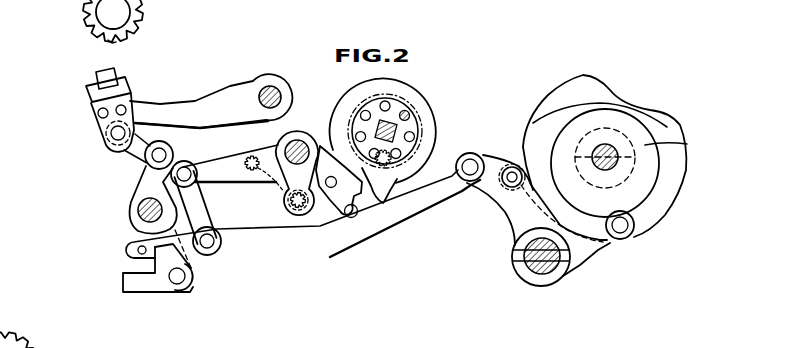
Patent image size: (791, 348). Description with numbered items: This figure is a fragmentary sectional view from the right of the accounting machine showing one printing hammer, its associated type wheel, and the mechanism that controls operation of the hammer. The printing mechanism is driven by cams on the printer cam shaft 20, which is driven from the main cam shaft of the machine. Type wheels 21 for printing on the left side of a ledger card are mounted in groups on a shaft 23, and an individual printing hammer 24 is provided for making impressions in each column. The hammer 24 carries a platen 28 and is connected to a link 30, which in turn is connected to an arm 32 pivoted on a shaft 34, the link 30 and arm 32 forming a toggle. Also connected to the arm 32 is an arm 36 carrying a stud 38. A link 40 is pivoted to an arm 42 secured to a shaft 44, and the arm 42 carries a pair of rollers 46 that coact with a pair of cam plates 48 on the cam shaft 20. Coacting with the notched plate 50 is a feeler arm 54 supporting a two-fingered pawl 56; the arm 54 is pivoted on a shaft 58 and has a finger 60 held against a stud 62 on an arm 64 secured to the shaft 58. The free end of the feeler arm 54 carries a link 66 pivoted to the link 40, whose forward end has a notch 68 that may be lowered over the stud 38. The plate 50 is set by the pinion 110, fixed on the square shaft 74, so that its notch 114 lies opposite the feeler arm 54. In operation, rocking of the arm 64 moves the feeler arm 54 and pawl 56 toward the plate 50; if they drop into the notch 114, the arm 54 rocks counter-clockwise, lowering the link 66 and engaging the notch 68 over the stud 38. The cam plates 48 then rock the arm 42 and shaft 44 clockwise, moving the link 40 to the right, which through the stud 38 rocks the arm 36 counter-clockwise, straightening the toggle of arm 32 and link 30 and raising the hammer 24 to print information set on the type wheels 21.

The printer cam shaft 20 is at (610, 143).
The type wheels 21 is at (112, 42).
The shaft 23 is at (113, 12).
The printing hammer 24 is at (195, 105).
The platen 28 is at (103, 71).
The link 30 is at (138, 150).
The arm 32 is at (142, 178).
The shaft 34 is at (137, 210).
The arm 36 is at (135, 288).
The stud 38 is at (175, 288).
The link 40 is at (434, 205).
The arm 42 is at (515, 212).
The shaft 44 is at (557, 267).
The rollers 46 is at (505, 166).
The cam plates 48 is at (673, 158).
The notched plate 50 is at (415, 89).
The feeler arm 54 is at (338, 210).
The two-fingered pawl 56 is at (331, 144).
The shaft 58 is at (294, 148).
The finger 60 is at (278, 200).
The stud 62 is at (288, 218).
The arm 64 is at (276, 148).
The link 66 is at (198, 208).
The notch 68 is at (188, 266).
The square shaft 74 is at (410, 140).
The pinion 110 is at (433, 127).
The notch 114 is at (380, 204).